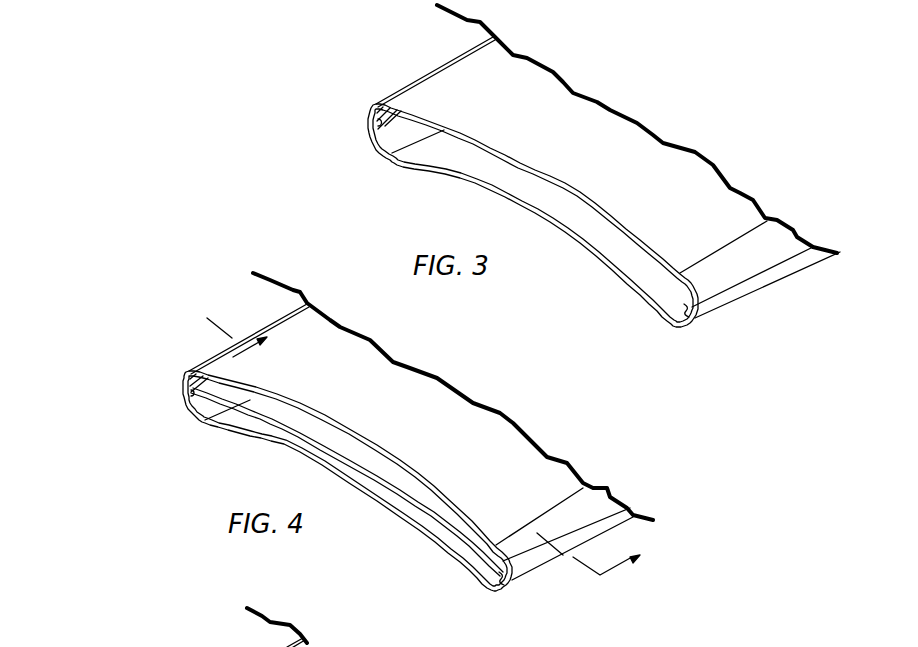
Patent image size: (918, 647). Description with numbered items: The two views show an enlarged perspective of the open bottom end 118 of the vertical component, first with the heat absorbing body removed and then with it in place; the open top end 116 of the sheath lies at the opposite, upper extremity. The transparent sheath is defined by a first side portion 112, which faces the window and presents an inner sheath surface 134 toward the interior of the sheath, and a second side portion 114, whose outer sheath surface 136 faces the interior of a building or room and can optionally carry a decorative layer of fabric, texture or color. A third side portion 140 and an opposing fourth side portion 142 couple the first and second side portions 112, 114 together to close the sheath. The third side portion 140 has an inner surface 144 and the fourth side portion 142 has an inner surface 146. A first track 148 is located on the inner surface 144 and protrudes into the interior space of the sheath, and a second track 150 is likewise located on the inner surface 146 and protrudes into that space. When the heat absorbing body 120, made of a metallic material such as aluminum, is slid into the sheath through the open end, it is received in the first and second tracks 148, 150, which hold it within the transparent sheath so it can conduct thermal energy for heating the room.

In FIG. 3, the first side portion 112 is at (533, 182).
In FIG. 3, the second side portion 114 is at (602, 132).
In FIG. 4, the second side portion 114 is at (453, 396).
In FIG. 4, the open top end 116 is at (132, 646).
In FIG. 3, the open bottom end 118 is at (548, 166).
In FIG. 4, the open bottom end 118 is at (359, 458).
In FIG. 4, the heat absorbing body 120 is at (367, 460).
In FIG. 3, the inner sheath surface 134 is at (470, 160).
In FIG. 3, the outer sheath surface 136 is at (645, 170).
In FIG. 4, the third side portion 140 is at (201, 349).
In FIG. 4, the fourth side portion 142 is at (560, 568).
In FIG. 4, the inner surface 144 is at (203, 407).
In FIG. 4, the inner surface 146 is at (507, 573).
In FIG. 4, the first track 148 is at (175, 388).
In FIG. 4, the second track 150 is at (518, 590).